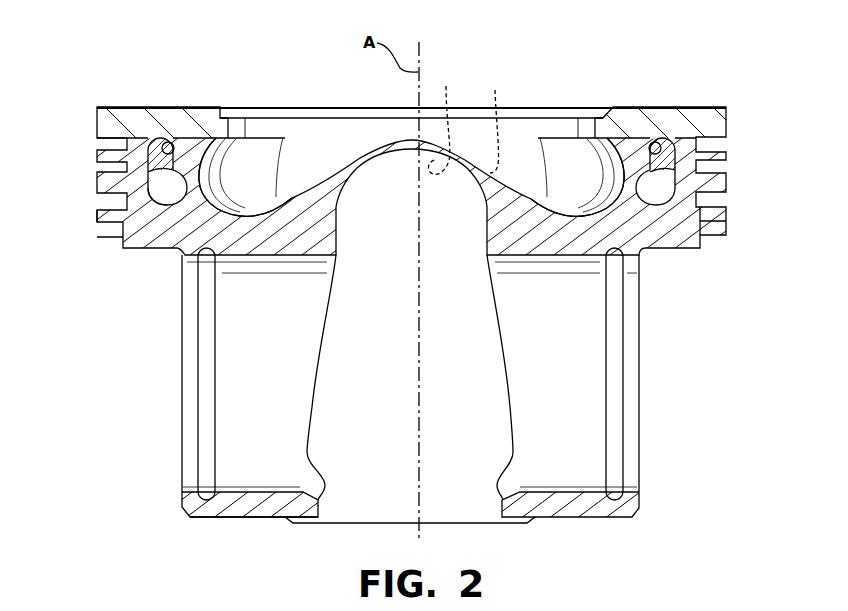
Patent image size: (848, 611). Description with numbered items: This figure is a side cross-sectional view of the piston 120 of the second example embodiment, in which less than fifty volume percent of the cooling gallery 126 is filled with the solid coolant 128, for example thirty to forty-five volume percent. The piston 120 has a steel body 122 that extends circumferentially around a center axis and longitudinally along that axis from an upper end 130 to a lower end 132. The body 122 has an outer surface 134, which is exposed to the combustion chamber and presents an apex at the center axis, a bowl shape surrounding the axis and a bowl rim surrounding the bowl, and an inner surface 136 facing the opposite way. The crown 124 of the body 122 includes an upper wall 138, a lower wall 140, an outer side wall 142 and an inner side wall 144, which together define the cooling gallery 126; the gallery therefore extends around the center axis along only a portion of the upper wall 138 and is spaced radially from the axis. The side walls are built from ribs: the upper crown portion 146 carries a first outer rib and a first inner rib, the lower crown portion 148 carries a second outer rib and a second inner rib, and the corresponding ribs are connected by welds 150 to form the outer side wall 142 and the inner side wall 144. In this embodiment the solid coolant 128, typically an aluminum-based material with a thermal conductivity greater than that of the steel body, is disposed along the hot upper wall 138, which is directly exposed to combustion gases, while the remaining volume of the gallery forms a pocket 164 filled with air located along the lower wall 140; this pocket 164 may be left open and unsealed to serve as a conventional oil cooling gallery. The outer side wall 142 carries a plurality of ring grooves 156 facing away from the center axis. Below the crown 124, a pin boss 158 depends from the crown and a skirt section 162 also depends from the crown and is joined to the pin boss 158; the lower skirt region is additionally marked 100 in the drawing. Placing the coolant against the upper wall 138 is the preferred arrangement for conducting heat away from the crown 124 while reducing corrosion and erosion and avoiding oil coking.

The piston 100 is at (557, 490).
The piston 120 is at (588, 74).
The body 122 is at (648, 352).
The crown 124 is at (731, 104).
The cooling gallery 126 is at (172, 145).
The solid coolant 128 is at (160, 150).
The upper end 130 is at (668, 107).
The lower end 132 is at (240, 517).
The outer surface 134 is at (499, 122).
The inner surface 136 is at (447, 119).
The upper wall 138 is at (130, 122).
The lower wall 140 is at (162, 224).
The outer side wall 142 is at (702, 207).
The inner side wall 144 is at (618, 186).
The upper crown portion 146 is at (206, 99).
The lower crown portion 148 is at (215, 199).
The welds 150 is at (231, 130).
The ring grooves 156 is at (107, 220).
The pin boss 158 is at (178, 463).
The skirt section 162 is at (462, 508).
The pocket 164 is at (158, 185).